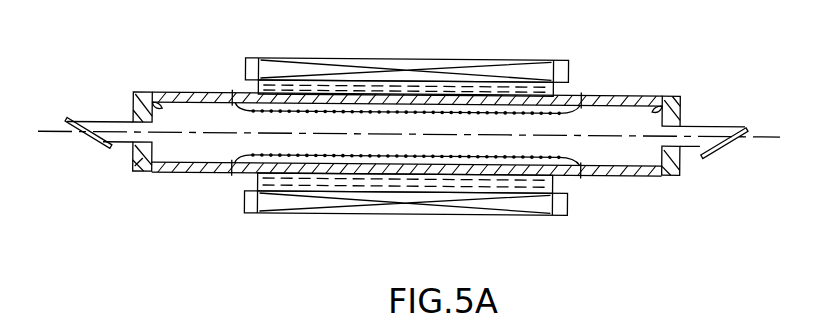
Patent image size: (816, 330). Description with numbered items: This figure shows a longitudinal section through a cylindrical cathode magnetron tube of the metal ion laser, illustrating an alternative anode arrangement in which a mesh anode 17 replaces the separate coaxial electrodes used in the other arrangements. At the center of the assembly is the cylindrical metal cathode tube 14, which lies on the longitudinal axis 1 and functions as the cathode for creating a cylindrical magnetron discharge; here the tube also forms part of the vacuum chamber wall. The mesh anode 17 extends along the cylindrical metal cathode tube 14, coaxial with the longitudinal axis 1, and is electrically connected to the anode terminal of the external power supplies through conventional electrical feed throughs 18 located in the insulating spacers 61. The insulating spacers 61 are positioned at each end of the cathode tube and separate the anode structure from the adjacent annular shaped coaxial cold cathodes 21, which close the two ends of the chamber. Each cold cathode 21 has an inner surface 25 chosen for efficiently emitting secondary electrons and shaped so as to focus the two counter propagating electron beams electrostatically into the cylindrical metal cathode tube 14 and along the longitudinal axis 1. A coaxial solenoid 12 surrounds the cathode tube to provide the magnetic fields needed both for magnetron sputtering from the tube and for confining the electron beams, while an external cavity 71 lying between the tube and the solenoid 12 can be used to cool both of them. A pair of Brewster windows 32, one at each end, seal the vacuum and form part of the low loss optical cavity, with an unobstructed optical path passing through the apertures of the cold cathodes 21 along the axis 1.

The longitudinal axis 1 is at (743, 134).
The coaxial solenoid 12 is at (552, 68).
The cylindrical metal cathode tube 14 is at (542, 169).
The mesh anode 17 is at (565, 167).
The electrical feed throughs 18 is at (233, 168).
The annular shaped coaxial cold cathode 21 is at (132, 172).
The inner surface 25 is at (165, 93).
The Brewster window 32 is at (102, 150).
The insulating spacer 61 is at (172, 170).
The external cavity 71 is at (277, 84).